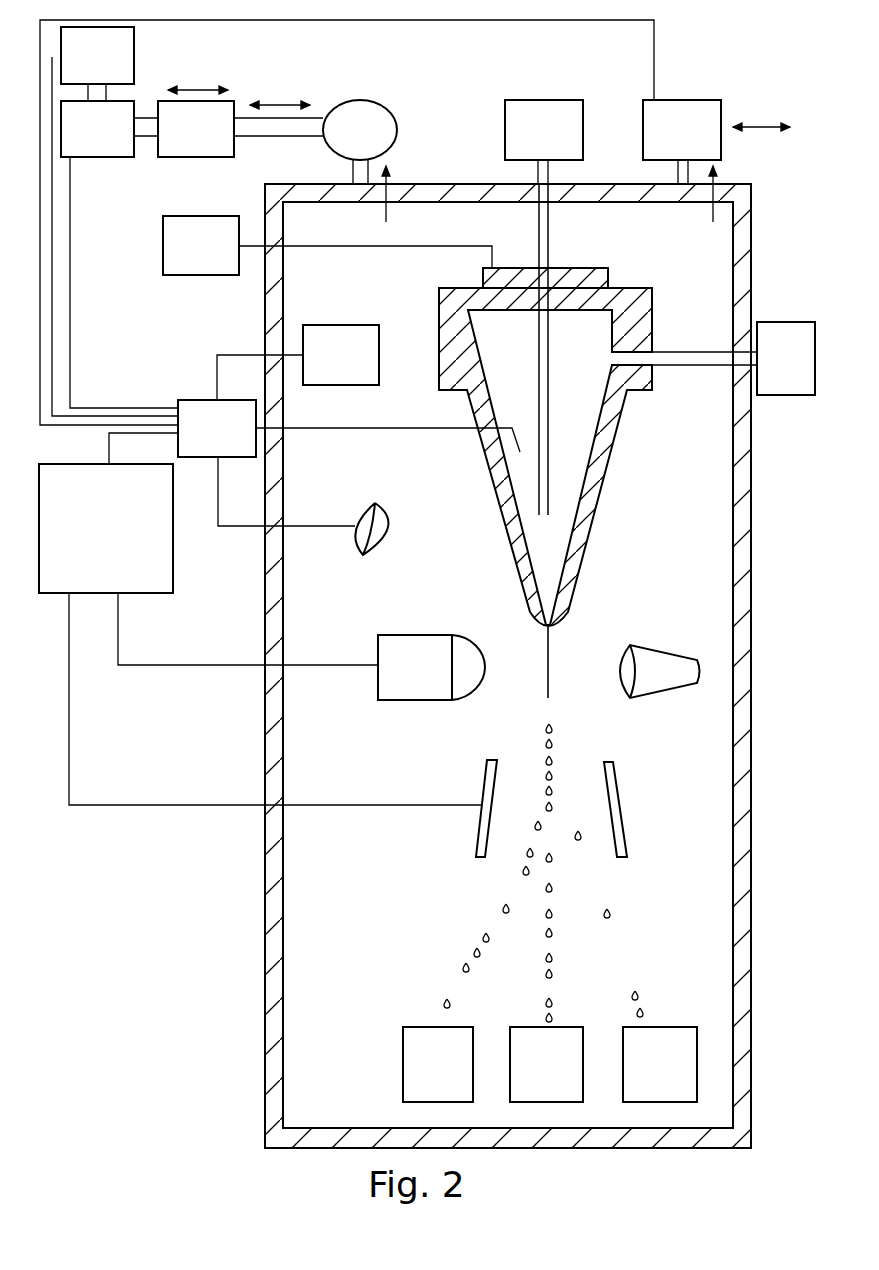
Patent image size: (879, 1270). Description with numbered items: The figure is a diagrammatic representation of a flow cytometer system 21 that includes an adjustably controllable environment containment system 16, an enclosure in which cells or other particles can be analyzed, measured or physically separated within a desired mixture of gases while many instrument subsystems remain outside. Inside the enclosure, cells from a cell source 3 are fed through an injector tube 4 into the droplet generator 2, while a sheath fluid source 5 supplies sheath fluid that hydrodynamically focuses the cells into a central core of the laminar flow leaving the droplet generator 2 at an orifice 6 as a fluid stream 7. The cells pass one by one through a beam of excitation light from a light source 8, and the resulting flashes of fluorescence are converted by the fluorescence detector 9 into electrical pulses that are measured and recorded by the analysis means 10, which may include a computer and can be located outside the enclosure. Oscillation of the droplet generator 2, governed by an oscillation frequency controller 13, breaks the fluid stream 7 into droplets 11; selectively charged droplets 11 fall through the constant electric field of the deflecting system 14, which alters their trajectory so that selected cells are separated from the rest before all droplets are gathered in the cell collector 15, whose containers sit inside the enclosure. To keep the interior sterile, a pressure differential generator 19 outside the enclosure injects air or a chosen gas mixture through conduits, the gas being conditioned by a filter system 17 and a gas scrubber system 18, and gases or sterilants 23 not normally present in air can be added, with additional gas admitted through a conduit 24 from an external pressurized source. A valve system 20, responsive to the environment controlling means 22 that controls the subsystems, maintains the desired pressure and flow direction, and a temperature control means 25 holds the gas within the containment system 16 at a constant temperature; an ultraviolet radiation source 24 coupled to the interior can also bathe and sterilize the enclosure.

The droplet generator 2 is at (595, 462).
The cell source 3 is at (534, 145).
The injector tube 4 is at (552, 509).
The sheath fluid source 5 is at (776, 373).
The orifice 6 is at (547, 630).
The fluid stream 7 is at (548, 662).
The light source 8 is at (665, 668).
The fluorescence detector 9 is at (403, 683).
The analysis means 10 is at (106, 528).
The droplets 11 is at (553, 729).
The oscillation frequency controller 13 is at (201, 245).
The deflecting system 14 is at (478, 833).
The cell collector 15 is at (425, 1080).
The adjustably controllable environment containment system 16 is at (752, 505).
The filter system 17 is at (97, 129).
The gas scrubber system 18 is at (196, 129).
The pressure differential generator 19 is at (381, 101).
The valve system 20 is at (675, 117).
The flow cytometer system 21 is at (551, 79).
The environment controlling means 22 is at (217, 428).
The gases, sterilants or other compounds 23 is at (97, 55).
The conduit 24 is at (390, 540).
The temperature control means 25 is at (341, 355).